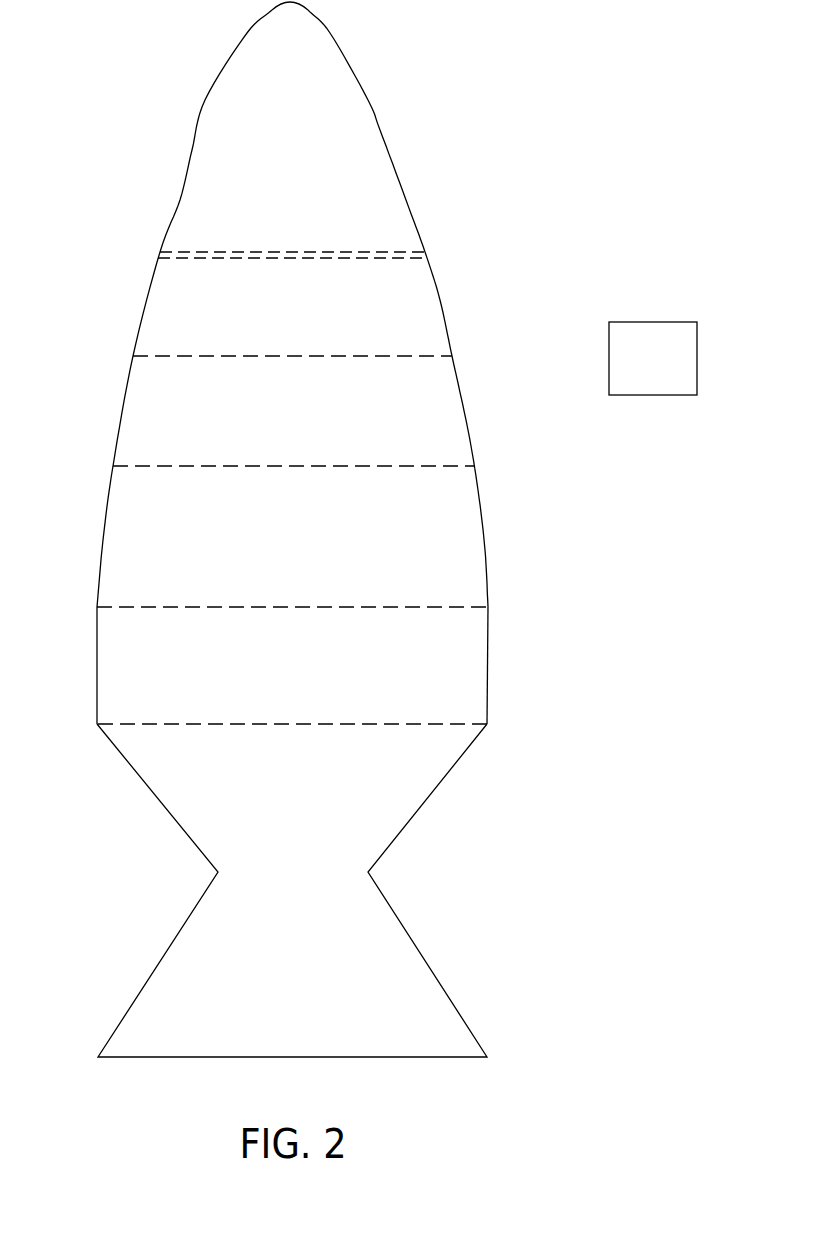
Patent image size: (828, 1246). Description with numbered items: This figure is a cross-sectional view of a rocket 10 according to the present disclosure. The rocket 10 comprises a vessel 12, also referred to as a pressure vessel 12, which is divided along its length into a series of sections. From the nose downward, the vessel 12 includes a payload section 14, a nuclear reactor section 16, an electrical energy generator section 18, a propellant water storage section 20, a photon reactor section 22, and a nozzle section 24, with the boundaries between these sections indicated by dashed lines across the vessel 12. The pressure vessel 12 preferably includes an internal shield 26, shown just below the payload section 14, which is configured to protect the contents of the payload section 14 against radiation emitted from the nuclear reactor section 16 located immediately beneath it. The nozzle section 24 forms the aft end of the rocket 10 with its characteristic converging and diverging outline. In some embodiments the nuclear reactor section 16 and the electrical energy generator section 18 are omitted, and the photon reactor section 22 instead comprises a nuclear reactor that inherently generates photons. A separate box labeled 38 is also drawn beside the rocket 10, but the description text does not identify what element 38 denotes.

The rocket 10 is at (130, 100).
The vessel 12 is at (347, 63).
The payload section 14 is at (367, 190).
The internal shield 26 is at (375, 245).
The nuclear reactor section 16 is at (388, 300).
The electrical energy generator section 18 is at (413, 424).
The propellant water storage section 20 is at (432, 545).
The photon reactor section 22 is at (435, 670).
The nozzle section 24 is at (382, 793).
The controller 38 is at (653, 358).